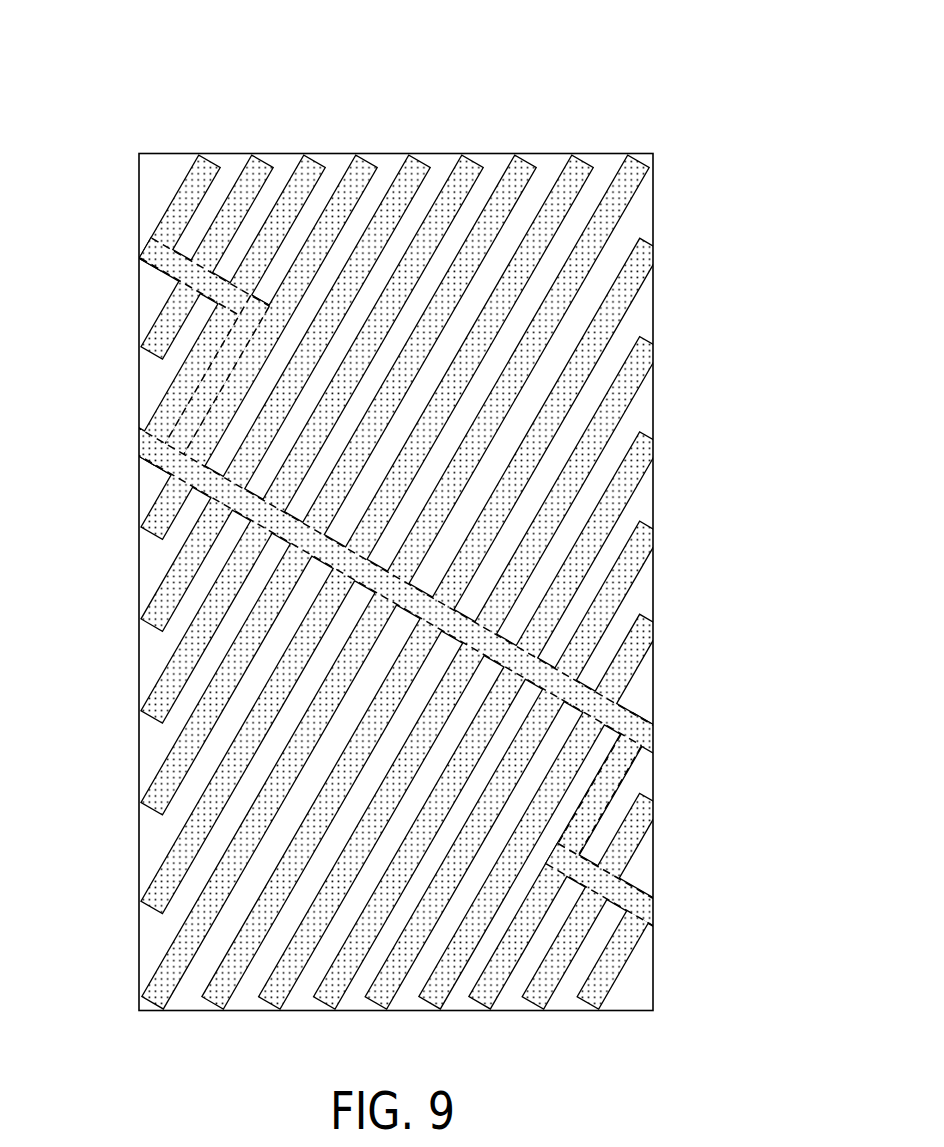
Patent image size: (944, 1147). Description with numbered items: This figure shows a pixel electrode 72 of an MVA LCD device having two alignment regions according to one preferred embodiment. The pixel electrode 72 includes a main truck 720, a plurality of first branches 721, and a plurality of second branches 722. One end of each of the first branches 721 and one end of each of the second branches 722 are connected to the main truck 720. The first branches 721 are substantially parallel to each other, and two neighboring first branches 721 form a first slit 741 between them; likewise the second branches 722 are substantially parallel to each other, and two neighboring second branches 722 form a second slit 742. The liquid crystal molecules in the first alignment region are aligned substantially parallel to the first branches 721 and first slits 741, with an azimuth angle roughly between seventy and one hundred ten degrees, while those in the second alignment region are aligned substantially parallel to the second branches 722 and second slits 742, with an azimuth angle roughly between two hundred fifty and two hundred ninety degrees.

The pixel electrode 72 is at (662, 86).
The main truck 720 is at (140, 450).
The first branches 721 is at (443, 564).
The second branches 722 is at (472, 623).
The first slit 741 is at (633, 226).
The second slit 742 is at (165, 831).